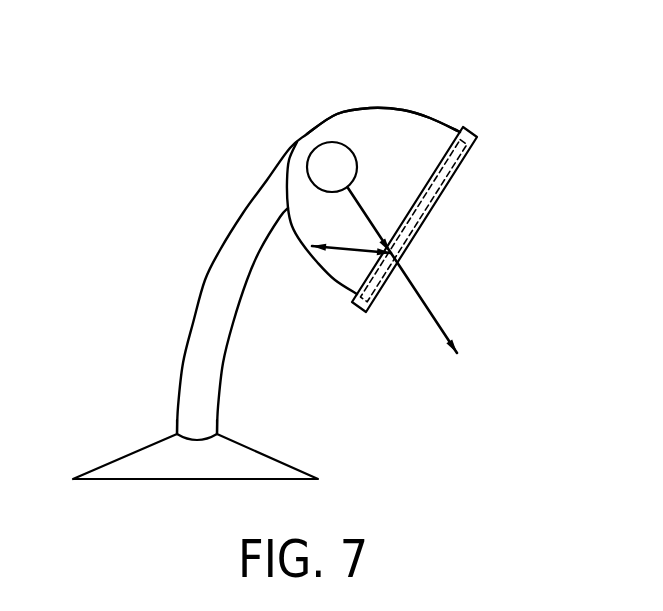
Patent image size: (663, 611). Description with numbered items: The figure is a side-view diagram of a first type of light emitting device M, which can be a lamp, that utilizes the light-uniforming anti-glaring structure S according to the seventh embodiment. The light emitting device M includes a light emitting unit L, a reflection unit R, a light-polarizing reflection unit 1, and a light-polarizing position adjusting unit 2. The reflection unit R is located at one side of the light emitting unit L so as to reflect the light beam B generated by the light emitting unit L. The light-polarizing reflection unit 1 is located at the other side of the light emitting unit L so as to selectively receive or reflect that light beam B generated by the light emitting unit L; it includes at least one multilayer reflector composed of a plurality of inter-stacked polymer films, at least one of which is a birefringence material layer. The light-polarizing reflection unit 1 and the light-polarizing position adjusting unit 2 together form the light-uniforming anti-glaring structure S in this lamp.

The light-polarizing reflection unit 1 is at (456, 168).
The light-polarizing position adjusting unit 2 is at (474, 134).
The light-uniforming anti-glaring structure S is at (545, 122).
The light emitting unit L is at (328, 140).
The reflection unit R is at (433, 115).
The light beam B is at (384, 270).
The light emitting device M is at (91, 108).